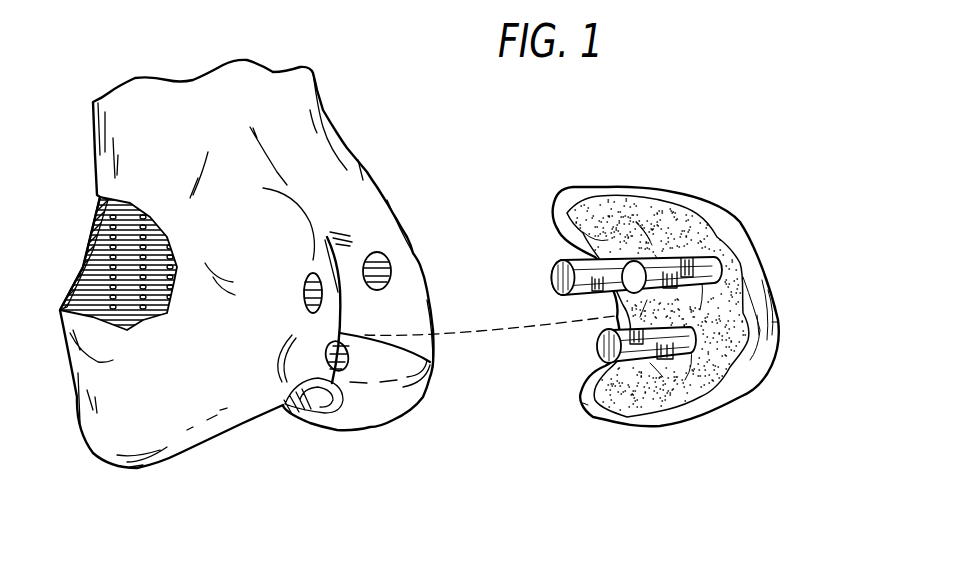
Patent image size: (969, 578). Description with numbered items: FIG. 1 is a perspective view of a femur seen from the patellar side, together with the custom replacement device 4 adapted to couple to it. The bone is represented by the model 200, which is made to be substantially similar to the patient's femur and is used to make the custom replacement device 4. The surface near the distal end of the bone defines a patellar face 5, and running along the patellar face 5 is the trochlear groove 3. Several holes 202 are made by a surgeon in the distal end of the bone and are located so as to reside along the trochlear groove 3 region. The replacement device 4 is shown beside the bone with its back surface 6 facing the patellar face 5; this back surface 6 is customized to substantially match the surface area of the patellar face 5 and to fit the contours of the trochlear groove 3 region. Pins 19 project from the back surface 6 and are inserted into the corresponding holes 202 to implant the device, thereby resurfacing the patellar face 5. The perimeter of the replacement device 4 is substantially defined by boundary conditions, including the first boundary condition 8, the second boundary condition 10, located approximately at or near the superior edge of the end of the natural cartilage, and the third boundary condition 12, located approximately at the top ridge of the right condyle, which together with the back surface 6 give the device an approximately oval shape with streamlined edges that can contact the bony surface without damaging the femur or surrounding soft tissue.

The model 200 is at (315, 478).
The patellar face 5 is at (350, 252).
The hole 202 is at (378, 275).
The trochlear groove 3 is at (430, 362).
The custom replacement device 4 is at (675, 316).
The second boundary condition 10 is at (575, 195).
The back surface 6 is at (656, 233).
The pin 19 is at (560, 278).
The third boundary condition 12 is at (777, 322).
The first boundary condition 8 is at (583, 403).